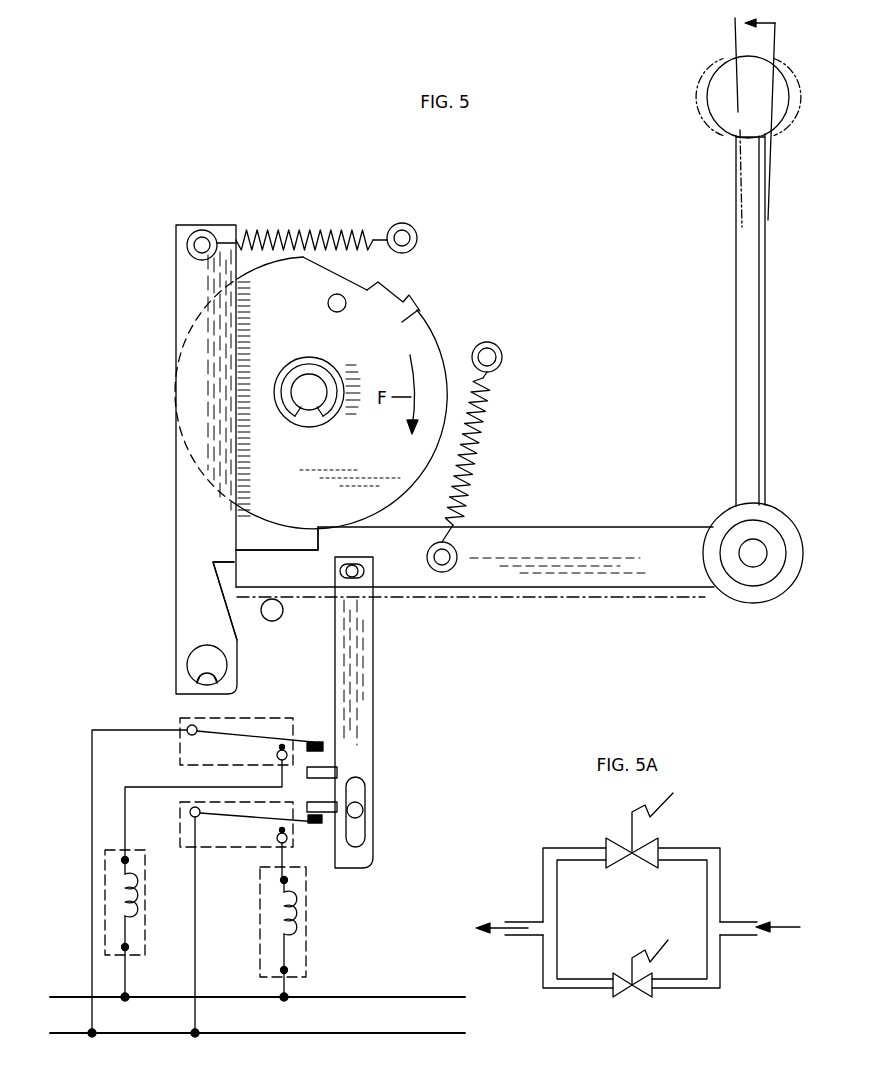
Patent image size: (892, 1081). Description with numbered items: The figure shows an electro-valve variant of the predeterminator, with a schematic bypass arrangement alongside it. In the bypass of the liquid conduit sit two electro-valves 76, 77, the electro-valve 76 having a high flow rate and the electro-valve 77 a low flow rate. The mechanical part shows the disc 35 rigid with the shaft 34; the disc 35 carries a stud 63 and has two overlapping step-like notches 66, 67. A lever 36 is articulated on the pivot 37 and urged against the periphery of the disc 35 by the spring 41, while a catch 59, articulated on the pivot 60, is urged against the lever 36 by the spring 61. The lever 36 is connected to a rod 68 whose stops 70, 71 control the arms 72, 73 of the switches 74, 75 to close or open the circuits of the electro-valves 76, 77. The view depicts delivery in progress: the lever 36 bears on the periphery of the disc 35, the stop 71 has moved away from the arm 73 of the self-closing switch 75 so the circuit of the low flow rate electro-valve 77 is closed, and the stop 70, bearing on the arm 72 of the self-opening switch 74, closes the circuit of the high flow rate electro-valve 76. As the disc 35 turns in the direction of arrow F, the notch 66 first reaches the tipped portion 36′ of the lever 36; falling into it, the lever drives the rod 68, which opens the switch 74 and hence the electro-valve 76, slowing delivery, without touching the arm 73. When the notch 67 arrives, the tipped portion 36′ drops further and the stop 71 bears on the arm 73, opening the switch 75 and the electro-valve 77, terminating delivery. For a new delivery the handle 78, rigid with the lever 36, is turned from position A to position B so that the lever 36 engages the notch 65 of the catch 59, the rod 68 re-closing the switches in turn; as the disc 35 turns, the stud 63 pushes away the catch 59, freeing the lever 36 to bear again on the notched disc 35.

In FIG. 5, the shaft 34 is at (315, 382).
In FIG. 5, the disc 35 is at (418, 308).
In FIG. 5, the lever 36 is at (530, 538).
In FIG. 5, the tipped portion 36′ is at (320, 528).
In FIG. 5, the pivot 37 is at (763, 553).
In FIG. 5, the spring 41 is at (478, 440).
In FIG. 5, the catch 59 is at (200, 318).
In FIG. 5, the pivot 60 is at (207, 659).
In FIG. 5, the spring 61 is at (270, 238).
In FIG. 5, the stud 63 is at (330, 302).
In FIG. 5, the notch 65 is at (230, 563).
In FIG. 5, the notch 66 is at (388, 290).
In FIG. 5, the notch 67 is at (330, 268).
In FIG. 5, the rod 68 is at (357, 663).
In FIG. 5, the stop 70 is at (328, 805).
In FIG. 5, the stop 71 is at (325, 768).
In FIG. 5, the arm 72 is at (317, 826).
In FIG. 5, the arm 73 is at (317, 740).
In FIG. 5, the switch 74 is at (232, 830).
In FIG. 5, the switch 75 is at (202, 720).
In FIG. 5, the electro-valve 76 is at (298, 917).
In FIG. 5A, the electro-valve 76 is at (626, 846).
In FIG. 5, the electro-valve 77 is at (138, 898).
In FIG. 5A, the electro-valve 77 is at (643, 983).
In FIG. 5, the handle 78 is at (748, 300).